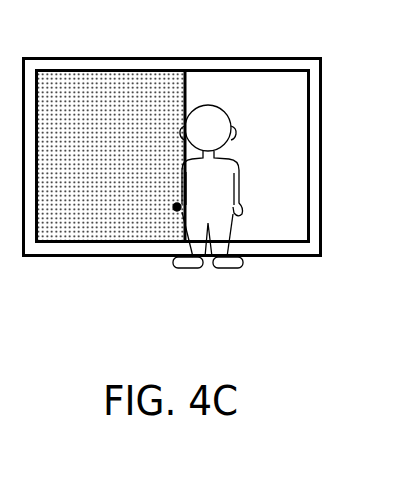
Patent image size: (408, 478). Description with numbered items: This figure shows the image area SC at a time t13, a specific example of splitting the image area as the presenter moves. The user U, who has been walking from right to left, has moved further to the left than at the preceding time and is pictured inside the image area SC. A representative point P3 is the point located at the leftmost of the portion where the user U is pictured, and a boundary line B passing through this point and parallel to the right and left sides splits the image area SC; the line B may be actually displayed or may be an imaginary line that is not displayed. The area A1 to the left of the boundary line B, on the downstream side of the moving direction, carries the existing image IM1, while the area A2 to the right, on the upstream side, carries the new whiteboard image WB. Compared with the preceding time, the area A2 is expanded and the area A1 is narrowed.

The time t13 is at (48, 34).
The image area SC is at (294, 257).
The area A1 is at (72, 243).
The area A2 is at (279, 75).
The boundary line B is at (187, 90).
The user U is at (195, 268).
The representative point P3 is at (178, 209).